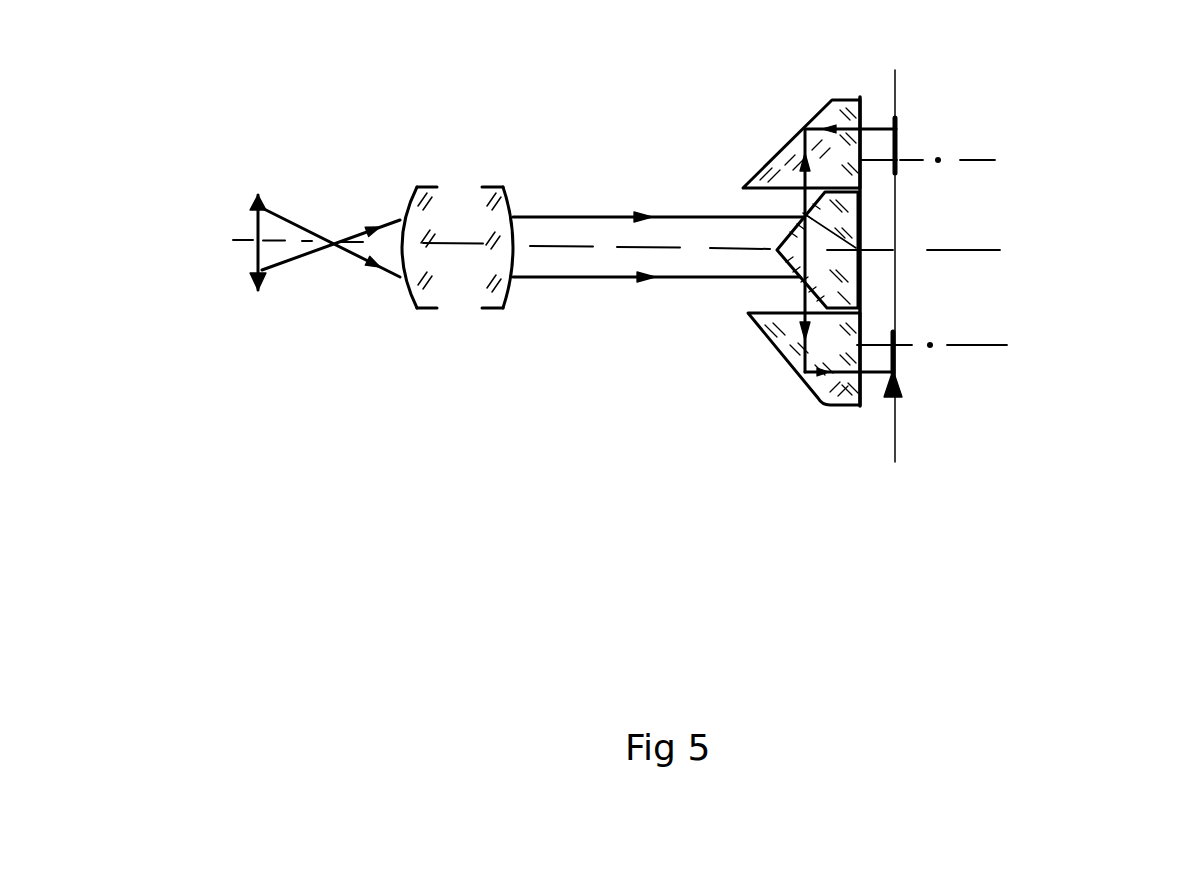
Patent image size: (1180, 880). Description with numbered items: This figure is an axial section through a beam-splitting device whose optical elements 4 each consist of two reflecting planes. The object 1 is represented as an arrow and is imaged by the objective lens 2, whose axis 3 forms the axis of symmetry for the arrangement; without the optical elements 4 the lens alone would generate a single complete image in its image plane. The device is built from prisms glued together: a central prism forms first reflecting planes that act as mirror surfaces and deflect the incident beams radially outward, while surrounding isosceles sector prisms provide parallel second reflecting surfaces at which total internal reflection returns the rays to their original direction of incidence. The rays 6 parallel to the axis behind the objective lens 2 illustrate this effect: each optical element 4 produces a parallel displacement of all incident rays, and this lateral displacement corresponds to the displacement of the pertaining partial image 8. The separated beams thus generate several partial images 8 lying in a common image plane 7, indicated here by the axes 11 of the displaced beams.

The object 1 is at (255, 232).
The objective lens 2 is at (463, 213).
The axis 3 is at (279, 239).
The optical element 4 is at (837, 403).
The rays 6 is at (830, 100).
The image plane 7 is at (892, 437).
The partial image 8 is at (900, 352).
The optical axis of partial beam 11 is at (970, 340).